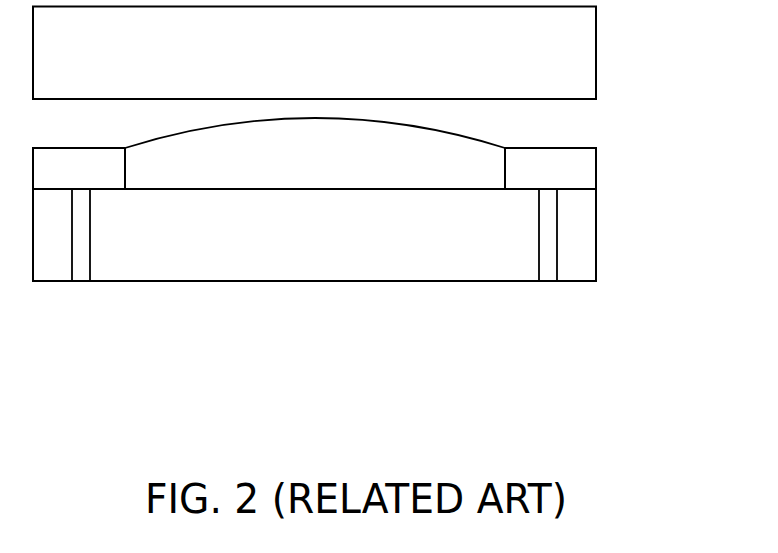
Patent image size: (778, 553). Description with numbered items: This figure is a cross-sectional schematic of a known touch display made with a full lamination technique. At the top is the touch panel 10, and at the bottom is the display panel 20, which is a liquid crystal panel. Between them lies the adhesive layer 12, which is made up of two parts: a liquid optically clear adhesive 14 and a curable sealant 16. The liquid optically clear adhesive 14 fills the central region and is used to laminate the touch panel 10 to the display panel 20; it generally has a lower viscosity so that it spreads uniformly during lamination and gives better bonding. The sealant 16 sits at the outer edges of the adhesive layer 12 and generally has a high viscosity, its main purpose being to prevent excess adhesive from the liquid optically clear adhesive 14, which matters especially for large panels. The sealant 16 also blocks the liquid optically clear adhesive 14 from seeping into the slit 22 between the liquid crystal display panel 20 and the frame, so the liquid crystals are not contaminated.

The touch panel 10 is at (588, 51).
The adhesive layer 12 is at (361, 146).
The liquid optically clear adhesive 14 is at (463, 148).
The curable sealant 16 is at (340, 168).
The display panel 20 is at (610, 190).
The slit 22 is at (549, 274).